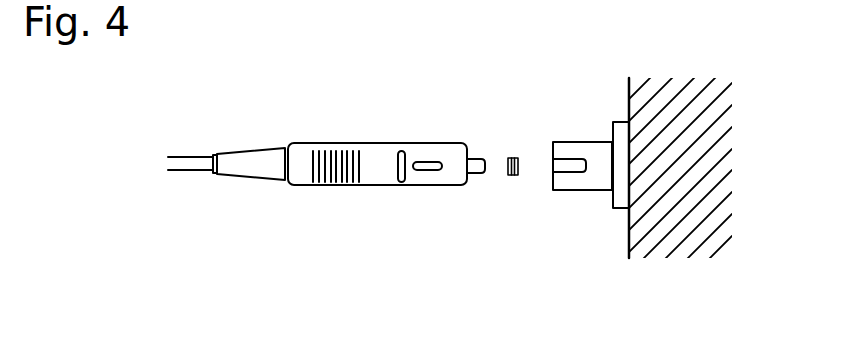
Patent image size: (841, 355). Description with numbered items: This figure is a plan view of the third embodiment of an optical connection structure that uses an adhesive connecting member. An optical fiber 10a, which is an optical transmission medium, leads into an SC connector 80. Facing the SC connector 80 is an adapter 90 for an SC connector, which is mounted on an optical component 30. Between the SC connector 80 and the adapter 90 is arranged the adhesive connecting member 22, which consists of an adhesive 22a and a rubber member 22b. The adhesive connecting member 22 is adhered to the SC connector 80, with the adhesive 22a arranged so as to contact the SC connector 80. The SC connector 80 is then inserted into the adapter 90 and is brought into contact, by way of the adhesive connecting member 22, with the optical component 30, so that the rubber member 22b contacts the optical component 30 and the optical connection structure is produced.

The optical fiber 10a is at (195, 157).
The SC connector 80 is at (378, 150).
The adhesive connecting member 22 is at (540, 258).
The adhesive 22a is at (508, 175).
The rubber member 22b is at (517, 176).
The adapter for an SC connector 90 is at (572, 143).
The optical component 30 is at (660, 243).